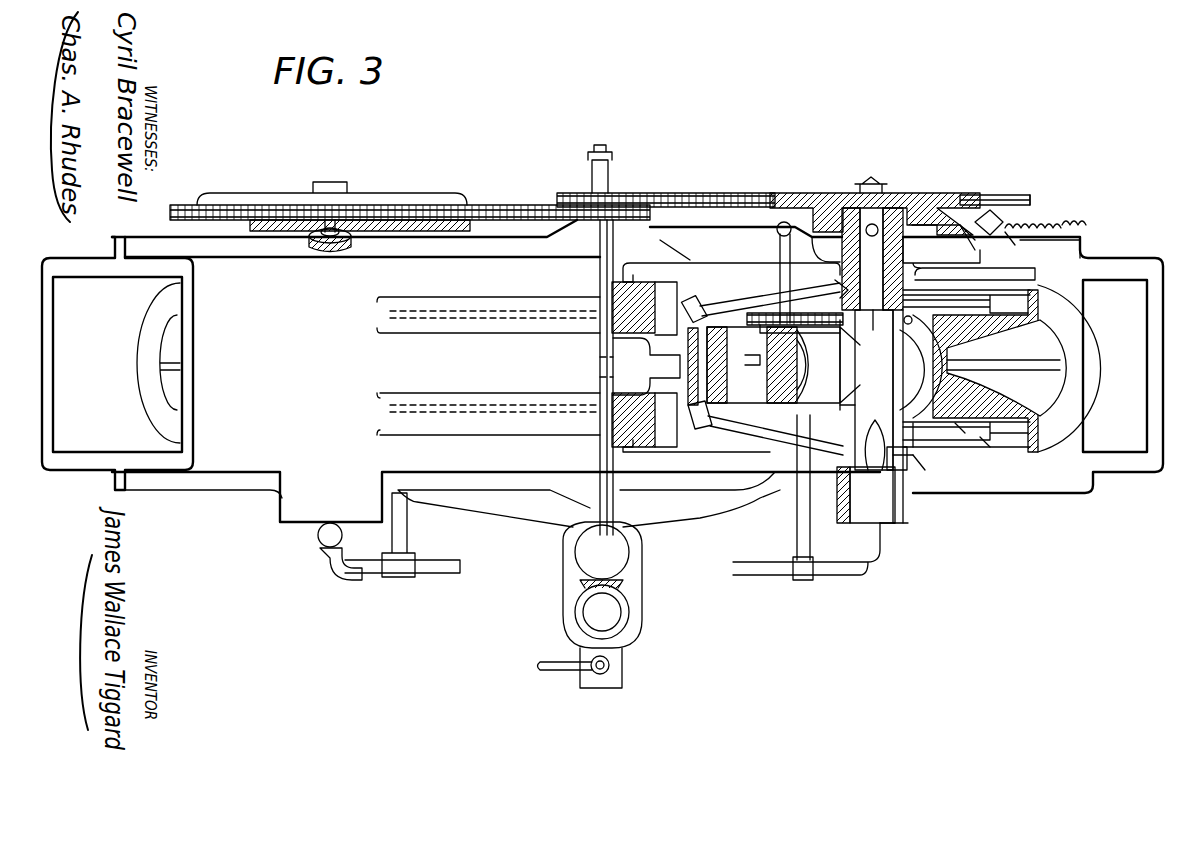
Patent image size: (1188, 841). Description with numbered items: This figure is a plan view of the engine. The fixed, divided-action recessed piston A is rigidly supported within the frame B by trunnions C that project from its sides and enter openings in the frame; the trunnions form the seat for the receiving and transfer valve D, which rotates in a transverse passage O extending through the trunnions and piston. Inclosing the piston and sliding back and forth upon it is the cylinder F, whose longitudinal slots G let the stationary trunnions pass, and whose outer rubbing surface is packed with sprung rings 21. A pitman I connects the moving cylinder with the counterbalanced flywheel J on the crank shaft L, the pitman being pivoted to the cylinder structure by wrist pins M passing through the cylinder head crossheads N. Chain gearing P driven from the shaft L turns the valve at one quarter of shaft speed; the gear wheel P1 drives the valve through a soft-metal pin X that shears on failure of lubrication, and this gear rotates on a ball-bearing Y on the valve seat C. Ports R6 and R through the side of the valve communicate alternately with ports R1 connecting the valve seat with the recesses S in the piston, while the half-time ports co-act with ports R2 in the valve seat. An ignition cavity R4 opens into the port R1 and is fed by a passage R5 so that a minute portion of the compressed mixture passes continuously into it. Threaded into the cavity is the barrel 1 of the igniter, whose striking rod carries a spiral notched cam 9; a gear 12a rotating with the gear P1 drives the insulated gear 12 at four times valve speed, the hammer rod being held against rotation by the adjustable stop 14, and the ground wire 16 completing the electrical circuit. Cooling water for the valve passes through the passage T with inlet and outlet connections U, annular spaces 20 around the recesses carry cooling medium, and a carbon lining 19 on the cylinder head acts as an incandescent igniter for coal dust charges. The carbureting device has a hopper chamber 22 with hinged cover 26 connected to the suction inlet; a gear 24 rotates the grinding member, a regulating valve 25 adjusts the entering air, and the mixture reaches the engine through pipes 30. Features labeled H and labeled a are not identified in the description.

The gear 12a is at (275, 205).
The insulated gear 12 is at (318, 252).
The chain gearing P is at (545, 205).
The crank shaft L is at (612, 155).
The hinged cover 26 is at (578, 563).
The hopper shaped closed chamber 22 is at (628, 600).
The gear 24 is at (620, 637).
The regulating valve 25 is at (598, 690).
The pipes 30 is at (518, 520).
The counterbalanced flywheel J is at (673, 240).
The pitman I is at (691, 235).
The wrist pins M is at (740, 320).
The cylinder head crossheads N is at (775, 320).
The ball-bearing Y is at (795, 330).
The lens H is at (1072, 325).
The recesses S is at (873, 368).
The port R is at (877, 416).
The axis a is at (925, 318).
The cylindrical barrel 1 is at (940, 286).
The trunnions C is at (935, 243).
The port openings U is at (918, 243).
The gear wheel P1 is at (905, 243).
The pin X is at (893, 240).
The recessed piston A is at (845, 200).
The spiral notched cam 9 is at (1020, 235).
The adjustable stop 14 is at (1035, 235).
The longitudinal slots G is at (990, 222).
The sprung rings 21 is at (1022, 233).
The cylinder F is at (1065, 235).
The ground wire 16 is at (1090, 243).
The annular spaces 20 is at (790, 395).
The ports R1 is at (925, 447).
The ports R2 is at (845, 500).
The carbon lining 19 is at (932, 440).
The ignition cavity R4 is at (982, 445).
The passage or pipe R5 is at (958, 432).
The half-time valve ports R6 is at (917, 480).
The transverse passage O is at (893, 455).
The water passage T is at (900, 540).
The receiving and transfer valve D is at (905, 545).
The frame B is at (1080, 243).